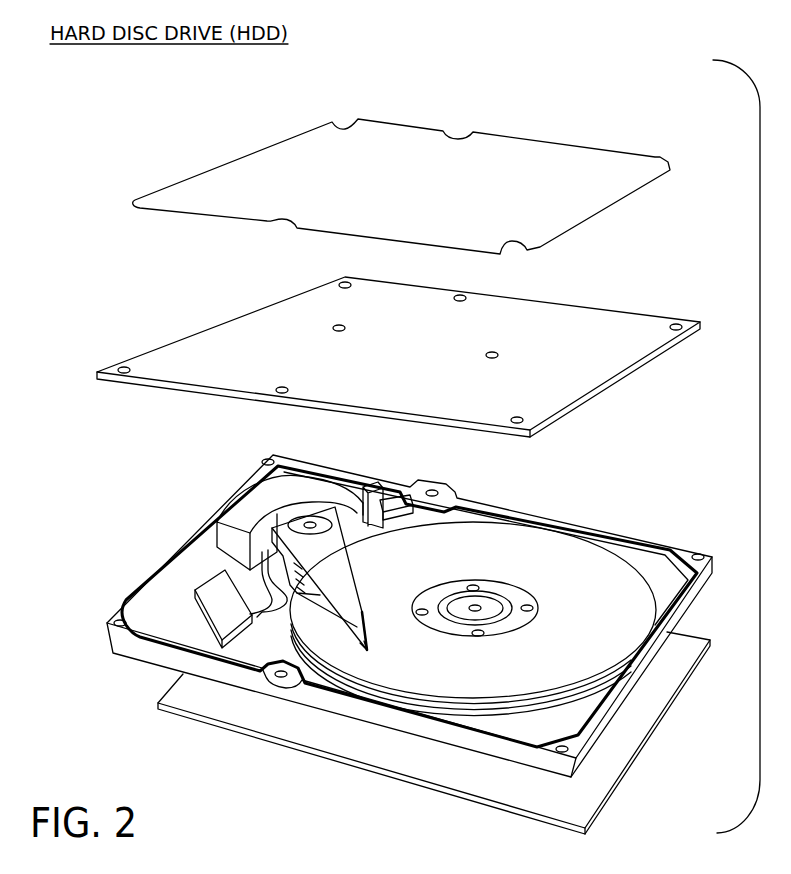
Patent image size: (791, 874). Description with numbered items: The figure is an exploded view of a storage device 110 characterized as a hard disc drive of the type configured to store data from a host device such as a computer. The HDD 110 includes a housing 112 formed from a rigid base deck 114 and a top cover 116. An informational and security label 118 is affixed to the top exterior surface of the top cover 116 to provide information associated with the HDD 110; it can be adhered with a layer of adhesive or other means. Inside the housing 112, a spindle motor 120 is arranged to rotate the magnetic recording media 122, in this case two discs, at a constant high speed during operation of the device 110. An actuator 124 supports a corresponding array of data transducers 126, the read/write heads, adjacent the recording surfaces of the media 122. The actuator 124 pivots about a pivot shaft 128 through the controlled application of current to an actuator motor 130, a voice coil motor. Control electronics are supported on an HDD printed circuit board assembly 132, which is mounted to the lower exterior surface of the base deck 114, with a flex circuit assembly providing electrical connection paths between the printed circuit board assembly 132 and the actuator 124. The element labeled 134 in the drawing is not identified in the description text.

The storage device 110 is at (141, 118).
The housing 112 is at (136, 518).
The base deck 114 is at (434, 733).
The top cover 116 is at (488, 318).
The informational and security label 118 is at (552, 165).
The spindle motor 120 is at (490, 607).
The magnetic recording media 122 is at (500, 712).
The actuator 124 is at (365, 562).
The data transducers 126 is at (371, 651).
The pivot shaft 128 is at (312, 522).
The actuator motor 130 is at (292, 493).
The HDD printed circuit board assembly 132 is at (275, 743).
The connector 134 is at (268, 611).